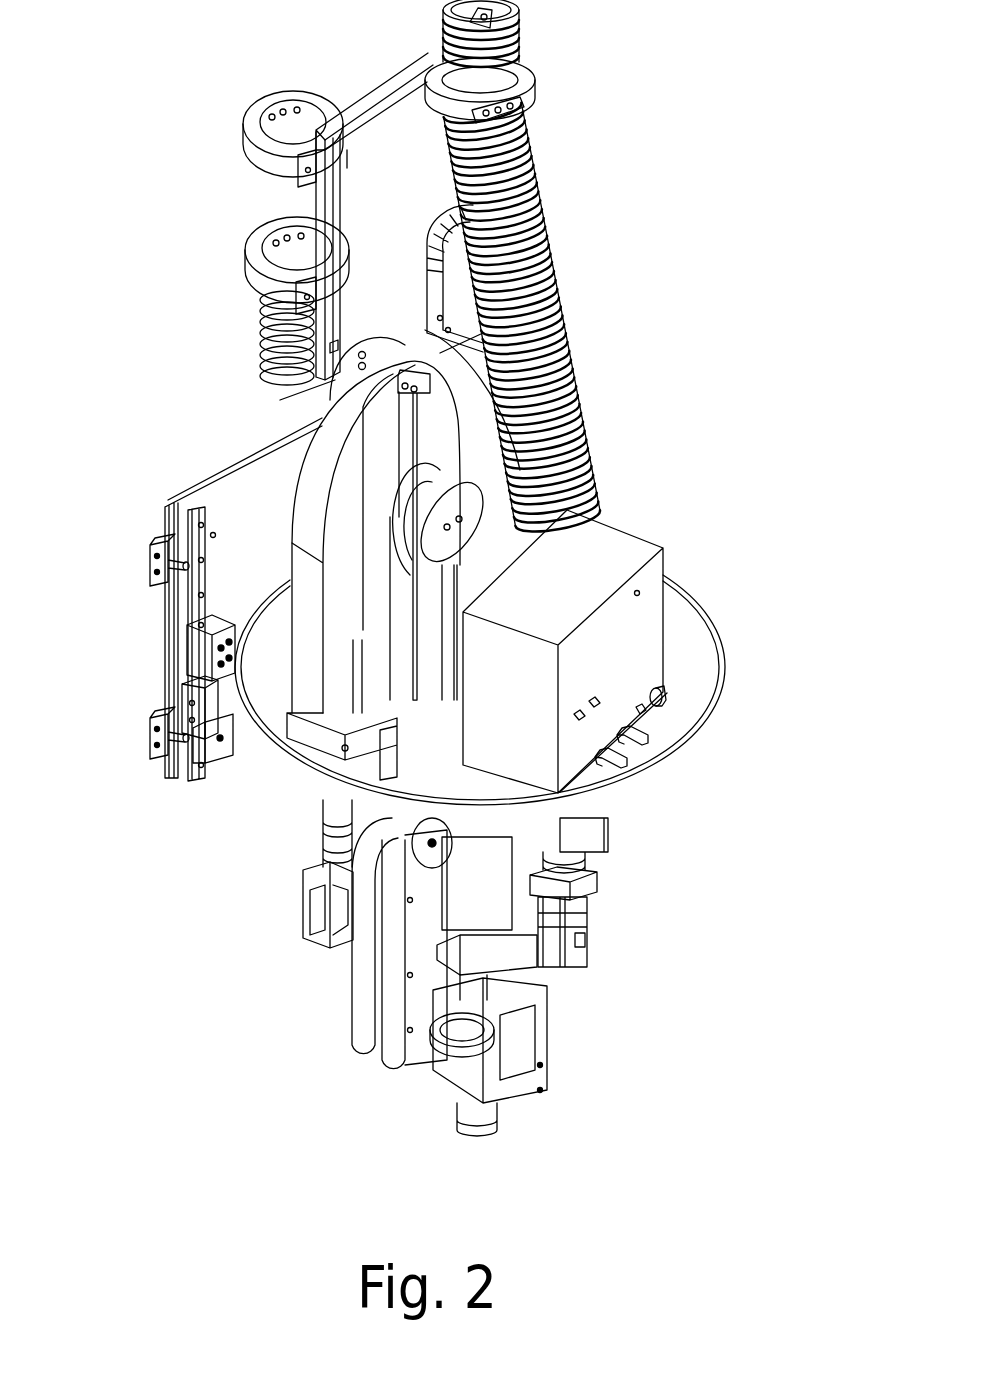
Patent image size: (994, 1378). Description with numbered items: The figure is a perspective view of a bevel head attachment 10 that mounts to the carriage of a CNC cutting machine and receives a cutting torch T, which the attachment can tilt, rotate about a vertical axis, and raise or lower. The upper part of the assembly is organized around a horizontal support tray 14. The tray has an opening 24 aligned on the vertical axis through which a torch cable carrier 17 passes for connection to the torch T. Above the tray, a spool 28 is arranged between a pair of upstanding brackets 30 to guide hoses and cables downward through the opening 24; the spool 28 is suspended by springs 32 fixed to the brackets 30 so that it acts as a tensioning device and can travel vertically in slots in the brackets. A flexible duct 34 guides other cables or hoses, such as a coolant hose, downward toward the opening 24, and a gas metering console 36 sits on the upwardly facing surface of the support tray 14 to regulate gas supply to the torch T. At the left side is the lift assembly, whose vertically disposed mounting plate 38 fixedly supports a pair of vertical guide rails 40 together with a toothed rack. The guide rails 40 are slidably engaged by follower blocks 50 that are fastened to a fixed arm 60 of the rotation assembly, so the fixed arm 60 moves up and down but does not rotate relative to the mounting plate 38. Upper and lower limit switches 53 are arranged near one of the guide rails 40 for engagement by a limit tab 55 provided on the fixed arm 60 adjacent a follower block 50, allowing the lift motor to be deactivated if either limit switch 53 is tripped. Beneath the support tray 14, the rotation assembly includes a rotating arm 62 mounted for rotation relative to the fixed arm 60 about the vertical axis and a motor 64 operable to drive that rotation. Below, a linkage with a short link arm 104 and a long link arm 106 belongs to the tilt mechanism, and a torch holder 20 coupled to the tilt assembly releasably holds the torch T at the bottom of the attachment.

The bevel head attachment 10 is at (700, 175).
The flexible duct 34 is at (560, 276).
The upstanding brackets 30 is at (330, 400).
The torch cable carrier 17 is at (297, 483).
The springs 32 is at (427, 430).
The spool 28 is at (480, 526).
The opening 24 is at (437, 700).
The gas metering console 36 is at (625, 540).
The horizontal support tray 14 is at (700, 643).
The mounting plate 38 is at (222, 478).
The vertical guide rails 40 is at (205, 535).
The follower blocks 50 is at (212, 615).
The limit tab 55 is at (190, 675).
The fixed arm 60 is at (232, 715).
The limit switches 53 is at (150, 553).
The rotating arm 62 is at (595, 827).
The motor 64 is at (587, 932).
The short link arm 104 is at (360, 963).
The long link arm 106 is at (385, 1060).
The torch holder 20 is at (455, 1085).
The cutting torch T is at (485, 1125).